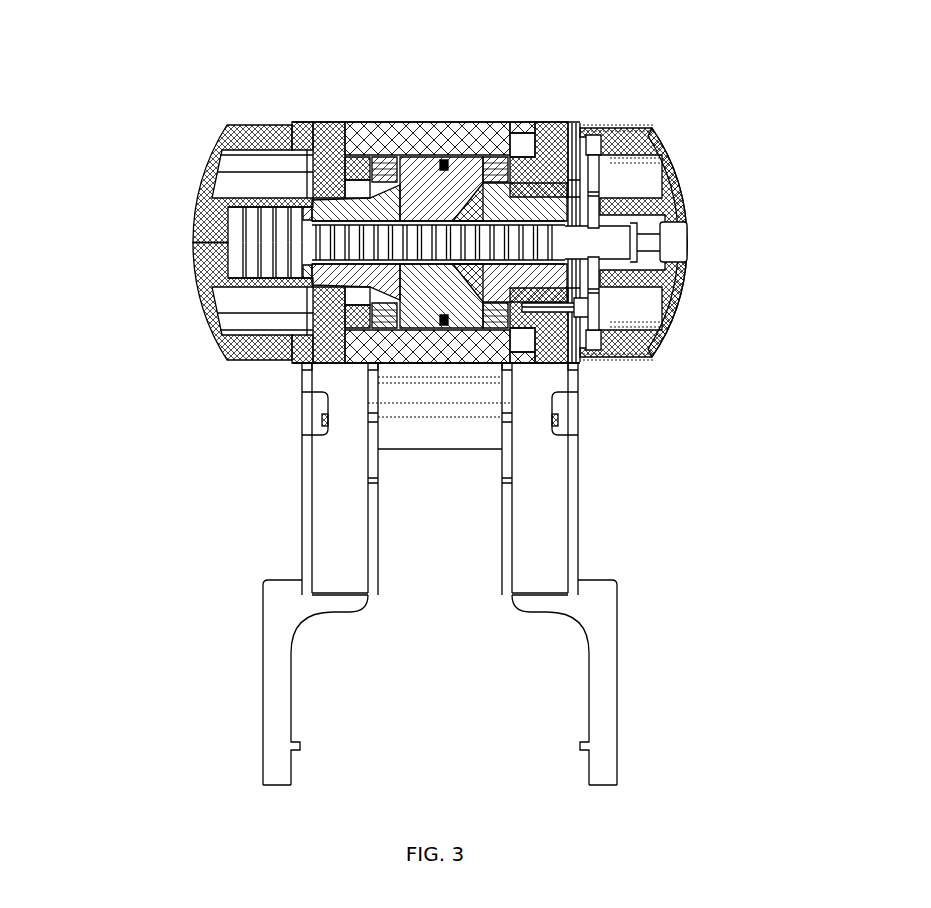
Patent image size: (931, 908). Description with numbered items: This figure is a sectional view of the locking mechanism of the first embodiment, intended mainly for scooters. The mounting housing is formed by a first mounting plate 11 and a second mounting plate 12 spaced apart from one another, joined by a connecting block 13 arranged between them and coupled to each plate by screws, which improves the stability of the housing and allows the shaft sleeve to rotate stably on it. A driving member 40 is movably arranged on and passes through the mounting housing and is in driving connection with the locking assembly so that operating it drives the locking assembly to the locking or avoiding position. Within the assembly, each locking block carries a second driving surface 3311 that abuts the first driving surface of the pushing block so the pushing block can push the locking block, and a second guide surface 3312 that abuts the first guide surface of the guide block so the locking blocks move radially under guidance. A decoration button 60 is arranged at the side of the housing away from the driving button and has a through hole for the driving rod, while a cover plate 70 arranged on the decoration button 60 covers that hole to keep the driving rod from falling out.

The first mounting plate 11 is at (333, 536).
The second mounting plate 12 is at (555, 533).
The connecting block 13 is at (452, 425).
The driving member 40 is at (205, 233).
The decoration button 60 is at (597, 134).
The cover plate 70 is at (690, 197).
The second driving surface 3311 is at (405, 190).
The second guide surface 3312 is at (476, 158).